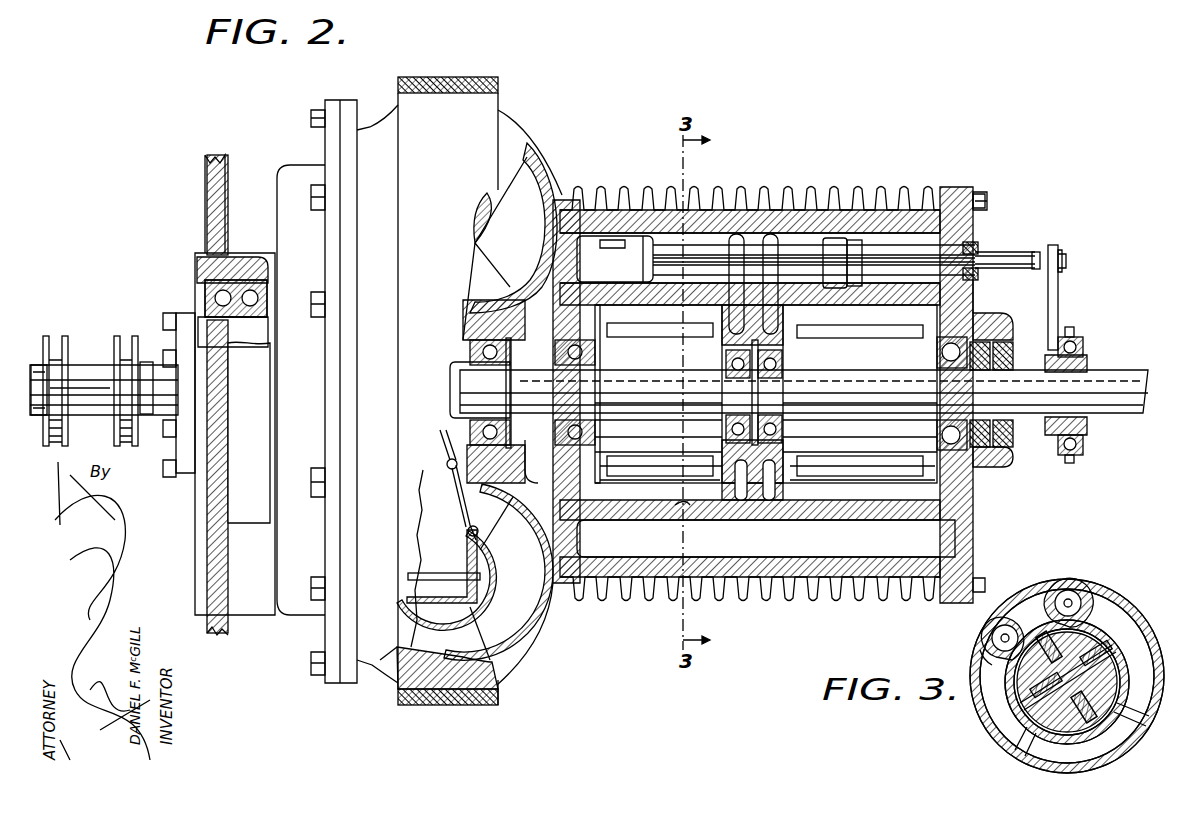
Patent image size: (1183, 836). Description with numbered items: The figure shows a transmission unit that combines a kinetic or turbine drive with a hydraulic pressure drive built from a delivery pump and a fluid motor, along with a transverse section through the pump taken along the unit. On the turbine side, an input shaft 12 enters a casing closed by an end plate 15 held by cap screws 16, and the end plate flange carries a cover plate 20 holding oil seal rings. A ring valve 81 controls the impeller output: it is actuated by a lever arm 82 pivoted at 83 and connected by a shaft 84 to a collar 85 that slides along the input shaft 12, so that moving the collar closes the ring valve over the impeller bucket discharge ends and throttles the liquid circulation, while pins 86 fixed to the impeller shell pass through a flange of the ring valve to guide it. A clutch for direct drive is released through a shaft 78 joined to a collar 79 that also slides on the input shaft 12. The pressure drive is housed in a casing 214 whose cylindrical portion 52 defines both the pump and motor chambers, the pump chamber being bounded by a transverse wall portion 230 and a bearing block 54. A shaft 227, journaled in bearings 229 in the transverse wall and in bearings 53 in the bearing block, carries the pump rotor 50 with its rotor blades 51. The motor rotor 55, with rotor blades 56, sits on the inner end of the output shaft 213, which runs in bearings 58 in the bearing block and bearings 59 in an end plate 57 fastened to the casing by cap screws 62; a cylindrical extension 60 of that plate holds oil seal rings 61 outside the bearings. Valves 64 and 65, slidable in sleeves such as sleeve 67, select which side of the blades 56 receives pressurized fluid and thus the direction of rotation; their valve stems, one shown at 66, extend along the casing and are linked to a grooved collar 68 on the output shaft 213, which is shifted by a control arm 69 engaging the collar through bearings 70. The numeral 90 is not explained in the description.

In FIG. 2, the input shaft 12 is at (152, 415).
In FIG. 2, the end plate 15 is at (294, 167).
In FIG. 2, the cap screws 16 is at (310, 118).
In FIG. 2, the cover plate 20 is at (176, 322).
In FIG. 2, the rotor 50 is at (640, 485).
In FIG. 3, the rotor 50 is at (1020, 680).
In FIG. 2, the rotor blades 51 is at (660, 343).
In FIG. 3, the rotor blades 51 is at (1005, 705).
In FIG. 2, the cylindrical portion 52 is at (675, 498).
In FIG. 2, the bearings 53 is at (726, 364).
In FIG. 2, the bearing block 54 is at (750, 505).
In FIG. 2, the motor rotor 55 is at (862, 485).
In FIG. 2, the rotor blades 56 is at (868, 335).
In FIG. 2, the end plate 57 is at (972, 525).
In FIG. 2, the bearings 58 is at (782, 364).
In FIG. 2, the bearings 59 is at (937, 351).
In FIG. 2, the cylindrical extension 60 is at (1003, 340).
In FIG. 2, the oil seal rings 61 is at (1015, 440).
In FIG. 2, the cap screws 62 is at (990, 206).
In FIG. 2, the valve 64 is at (756, 242).
In FIG. 3, the valve 64 is at (1069, 603).
In FIG. 3, the valve 65 is at (990, 637).
In FIG. 2, the valve stem 66 is at (1025, 265).
In FIG. 2, the sleeve 67 is at (610, 245).
In FIG. 2, the grooved collar 68 is at (1090, 426).
In FIG. 2, the arm 69 is at (1075, 336).
In FIG. 2, the bearings 70 is at (1082, 351).
In FIG. 2, the shaft 78 is at (144, 372).
In FIG. 2, the collar 79 is at (112, 345).
In FIG. 2, the ring valve 81 is at (447, 603).
In FIG. 2, the lever arm 82 is at (456, 516).
In FIG. 2, the pivot 83 is at (450, 480).
In FIG. 2, the shaft 84 is at (80, 380).
In FIG. 2, the collar 85 is at (52, 345).
In FIG. 2, the pins 86 is at (456, 575).
In FIG. 2, the blower housing 90 is at (452, 706).
In FIG. 2, the output shaft 213 is at (1138, 372).
In FIG. 2, the casing 214 is at (702, 195).
In FIG. 2, the shaft 227 is at (580, 382).
In FIG. 2, the bearings 229 is at (580, 342).
In FIG. 2, the transverse wall portion 230 is at (586, 560).